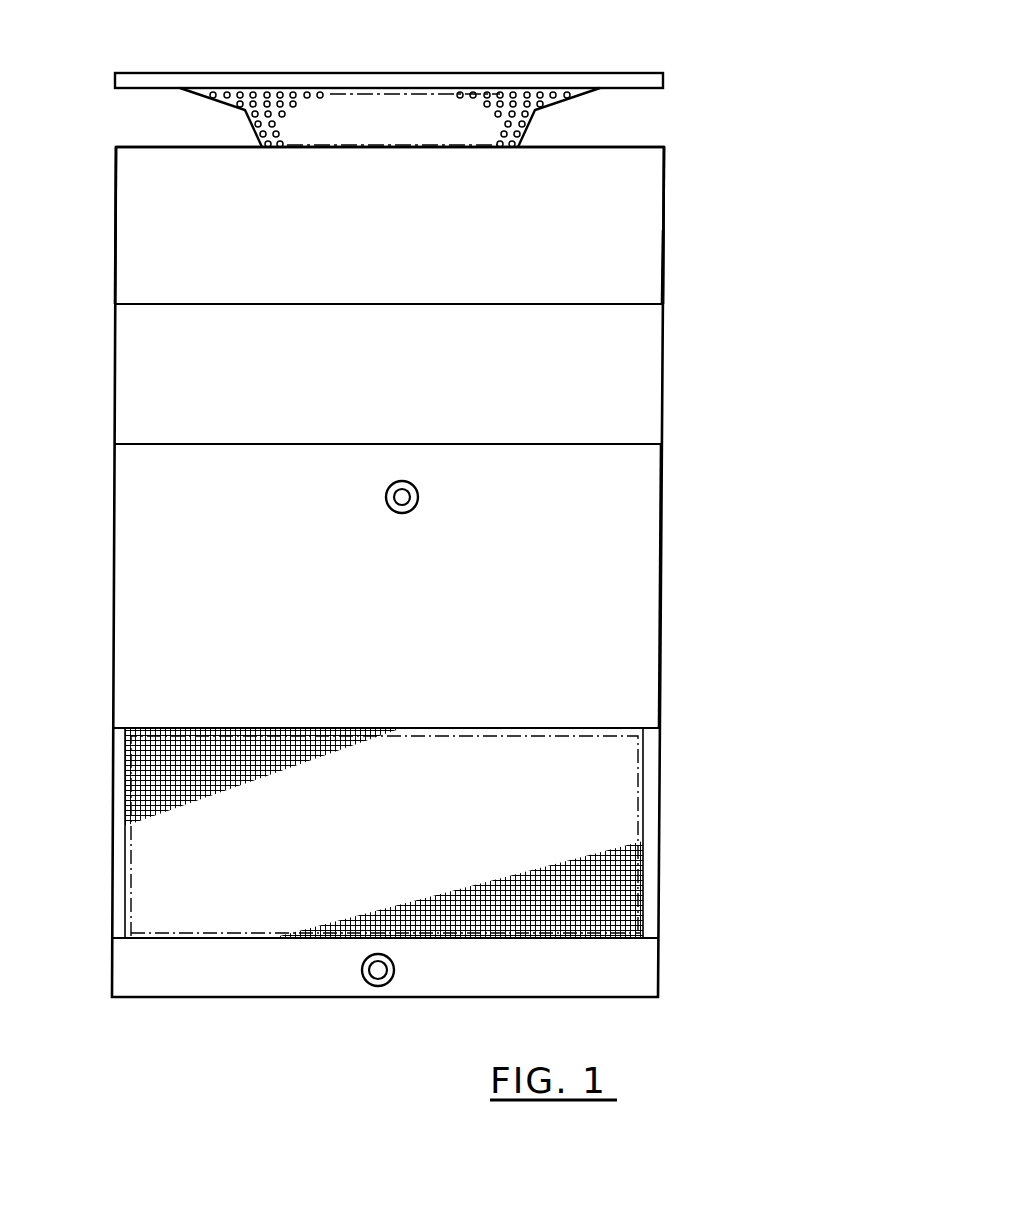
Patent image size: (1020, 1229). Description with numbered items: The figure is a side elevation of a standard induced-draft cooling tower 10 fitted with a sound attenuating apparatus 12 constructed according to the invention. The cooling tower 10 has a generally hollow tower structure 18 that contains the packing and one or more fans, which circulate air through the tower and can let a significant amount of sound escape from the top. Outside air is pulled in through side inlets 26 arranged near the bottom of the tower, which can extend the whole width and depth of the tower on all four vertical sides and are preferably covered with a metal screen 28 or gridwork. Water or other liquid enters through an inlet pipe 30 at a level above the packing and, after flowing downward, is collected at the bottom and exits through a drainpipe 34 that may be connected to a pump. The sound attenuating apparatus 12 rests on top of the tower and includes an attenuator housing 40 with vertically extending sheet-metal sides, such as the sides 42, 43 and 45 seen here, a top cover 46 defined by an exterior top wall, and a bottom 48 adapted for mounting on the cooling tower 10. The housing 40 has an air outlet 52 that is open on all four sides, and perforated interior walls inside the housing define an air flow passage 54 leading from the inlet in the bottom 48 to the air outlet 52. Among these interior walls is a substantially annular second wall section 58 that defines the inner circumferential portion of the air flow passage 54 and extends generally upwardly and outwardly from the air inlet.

The cooling tower 10 is at (708, 304).
The sound attenuating apparatus 12 is at (663, 205).
The tower structure 18 is at (635, 498).
The side inlets 26 is at (620, 793).
The metal screen 28 is at (628, 890).
The inlet pipe 30 is at (420, 497).
The drainpipe 34 is at (395, 970).
The attenuator housing 40 is at (667, 152).
The side 42 is at (138, 242).
The side 43 is at (115, 182).
The side 45 is at (663, 258).
The top cover 46 is at (447, 73).
The bottom 48 is at (607, 305).
The air outlet 52 is at (643, 117).
The air flow passage 54 is at (602, 97).
The second wall section 58 is at (530, 128).